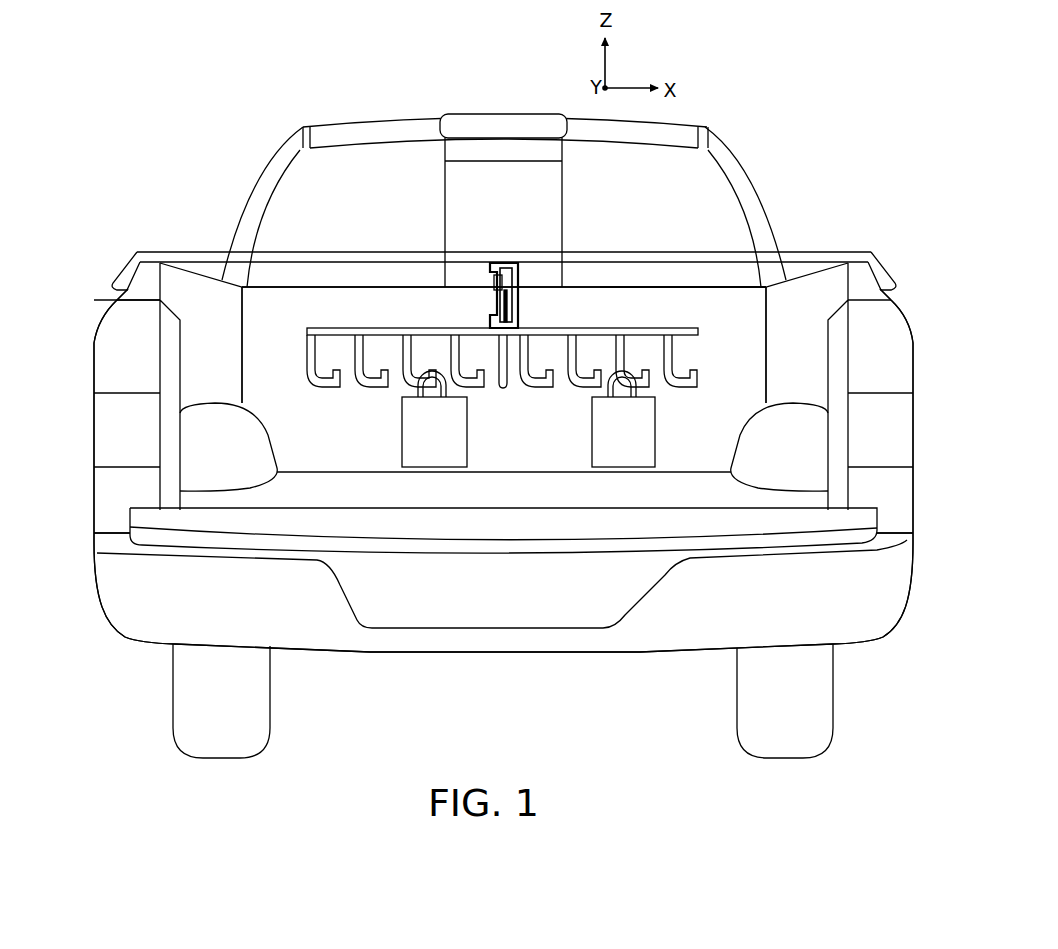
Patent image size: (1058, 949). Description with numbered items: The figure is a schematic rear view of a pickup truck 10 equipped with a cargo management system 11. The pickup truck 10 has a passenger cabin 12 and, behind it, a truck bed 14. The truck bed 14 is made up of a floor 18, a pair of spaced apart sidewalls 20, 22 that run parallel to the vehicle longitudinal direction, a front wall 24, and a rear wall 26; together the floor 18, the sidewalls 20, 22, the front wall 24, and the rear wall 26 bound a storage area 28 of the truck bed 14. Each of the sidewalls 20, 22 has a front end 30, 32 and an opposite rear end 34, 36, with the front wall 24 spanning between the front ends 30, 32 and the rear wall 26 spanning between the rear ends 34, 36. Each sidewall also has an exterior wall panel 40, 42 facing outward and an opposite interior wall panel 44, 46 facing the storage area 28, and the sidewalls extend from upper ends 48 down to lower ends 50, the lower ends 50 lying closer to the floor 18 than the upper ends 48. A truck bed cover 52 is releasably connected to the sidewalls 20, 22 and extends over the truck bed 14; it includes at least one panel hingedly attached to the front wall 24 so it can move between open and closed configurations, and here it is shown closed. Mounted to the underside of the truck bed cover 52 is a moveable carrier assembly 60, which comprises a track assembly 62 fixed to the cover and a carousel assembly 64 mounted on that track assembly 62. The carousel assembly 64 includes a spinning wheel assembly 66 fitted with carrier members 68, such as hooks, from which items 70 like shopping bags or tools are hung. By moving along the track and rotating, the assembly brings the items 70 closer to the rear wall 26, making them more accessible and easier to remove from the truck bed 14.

The pickup truck 10 is at (756, 136).
The cargo management system 11 is at (322, 280).
The passenger cabin 12 is at (376, 104).
The truck bed 14 is at (800, 294).
The floor 18 is at (677, 490).
The sidewall 20 is at (168, 283).
The sidewall 22 is at (838, 283).
The front wall 24 is at (679, 291).
The rear wall 26 is at (853, 540).
The storage area 28 is at (599, 296).
The front end 30 is at (243, 318).
The front end 32 is at (760, 320).
The rear end 34 is at (127, 328).
The rear end 36 is at (880, 330).
The exterior wall panel 40 is at (89, 437).
The exterior wall panel 42 is at (917, 437).
The interior wall panel 44 is at (218, 367).
The interior wall panel 46 is at (785, 365).
The upper end 48 is at (200, 273).
The lower end 50 is at (93, 533).
The truck bed cover 52 is at (407, 246).
The moveable carrier assembly 60 is at (485, 278).
The track assembly 62 is at (525, 277).
The carousel assembly 64 is at (372, 394).
The spinning wheel assembly 66 is at (528, 394).
The carrier members 68 is at (405, 353).
The items 70 is at (438, 448).